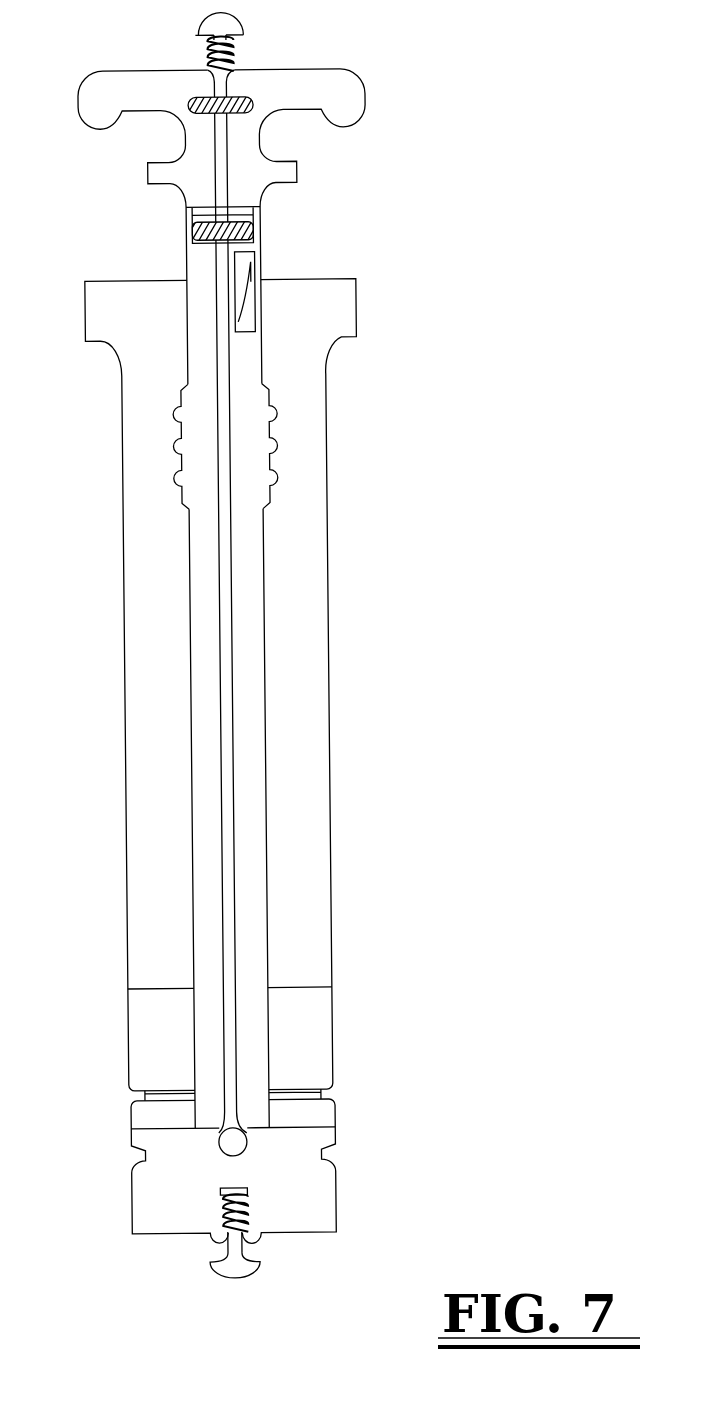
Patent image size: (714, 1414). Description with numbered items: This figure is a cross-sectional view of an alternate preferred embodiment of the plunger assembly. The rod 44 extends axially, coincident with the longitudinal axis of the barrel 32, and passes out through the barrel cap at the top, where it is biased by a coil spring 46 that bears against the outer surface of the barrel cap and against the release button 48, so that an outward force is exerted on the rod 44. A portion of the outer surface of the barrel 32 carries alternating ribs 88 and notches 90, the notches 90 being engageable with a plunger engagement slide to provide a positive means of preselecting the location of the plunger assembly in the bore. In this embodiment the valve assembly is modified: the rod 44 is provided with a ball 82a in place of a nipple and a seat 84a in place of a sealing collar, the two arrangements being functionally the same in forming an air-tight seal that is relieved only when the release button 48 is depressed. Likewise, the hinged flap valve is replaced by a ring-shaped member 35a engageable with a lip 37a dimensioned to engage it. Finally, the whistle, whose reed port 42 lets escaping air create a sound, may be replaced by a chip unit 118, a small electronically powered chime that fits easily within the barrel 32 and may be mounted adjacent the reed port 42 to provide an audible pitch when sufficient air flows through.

The release button 48 is at (246, 22).
The coil spring 46 is at (214, 50).
The chip unit 118 is at (259, 104).
The reed port 42 is at (271, 268).
The barrel 32 is at (191, 798).
The notches 90 is at (280, 417).
The ribs 88 is at (279, 495).
The rod 44 is at (226, 847).
The seat 84a is at (249, 1122).
The ball 82a is at (220, 1141).
The lip 37a is at (258, 1240).
The ring-shaped member 35a is at (241, 1272).